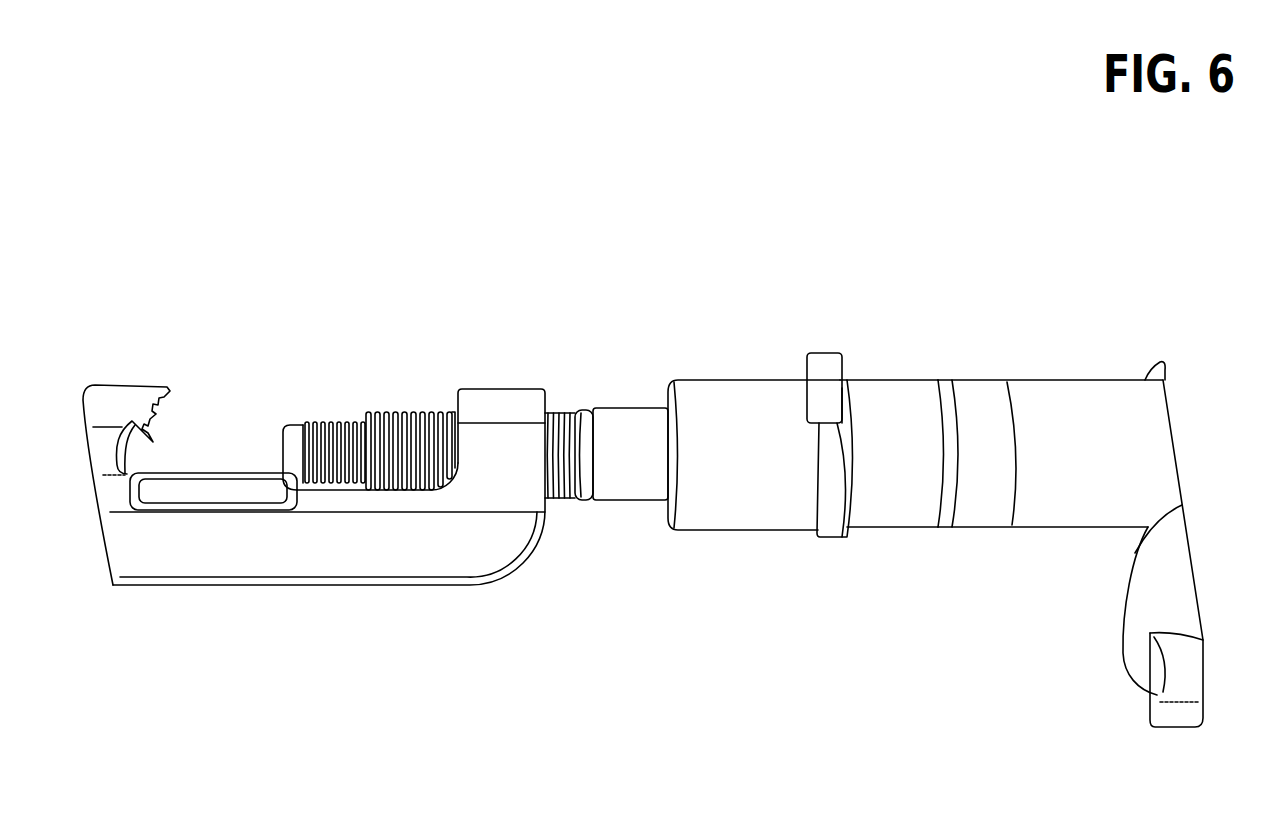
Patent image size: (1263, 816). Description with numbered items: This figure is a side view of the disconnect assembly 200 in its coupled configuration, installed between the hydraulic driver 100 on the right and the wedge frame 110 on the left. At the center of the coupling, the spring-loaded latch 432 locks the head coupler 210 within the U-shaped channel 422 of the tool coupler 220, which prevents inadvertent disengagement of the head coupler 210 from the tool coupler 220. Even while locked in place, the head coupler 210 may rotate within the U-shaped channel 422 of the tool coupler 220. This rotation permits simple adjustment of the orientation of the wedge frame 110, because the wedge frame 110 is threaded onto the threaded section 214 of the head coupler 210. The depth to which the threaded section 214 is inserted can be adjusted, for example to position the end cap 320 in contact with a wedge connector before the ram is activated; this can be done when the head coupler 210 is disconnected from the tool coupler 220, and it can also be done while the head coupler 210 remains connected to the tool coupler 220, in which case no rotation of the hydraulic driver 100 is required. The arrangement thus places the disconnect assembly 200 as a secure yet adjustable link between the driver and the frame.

The hydraulic driver 100 is at (1068, 392).
The wedge frame 110 is at (383, 567).
The disconnect assembly 200 is at (751, 430).
The head coupler 210 is at (612, 406).
The threaded section 214 is at (393, 415).
The tool coupler 220 is at (888, 523).
The end cap 320 is at (295, 428).
The U-shaped channel 422 is at (723, 388).
The spring-loaded latch 432 is at (832, 358).